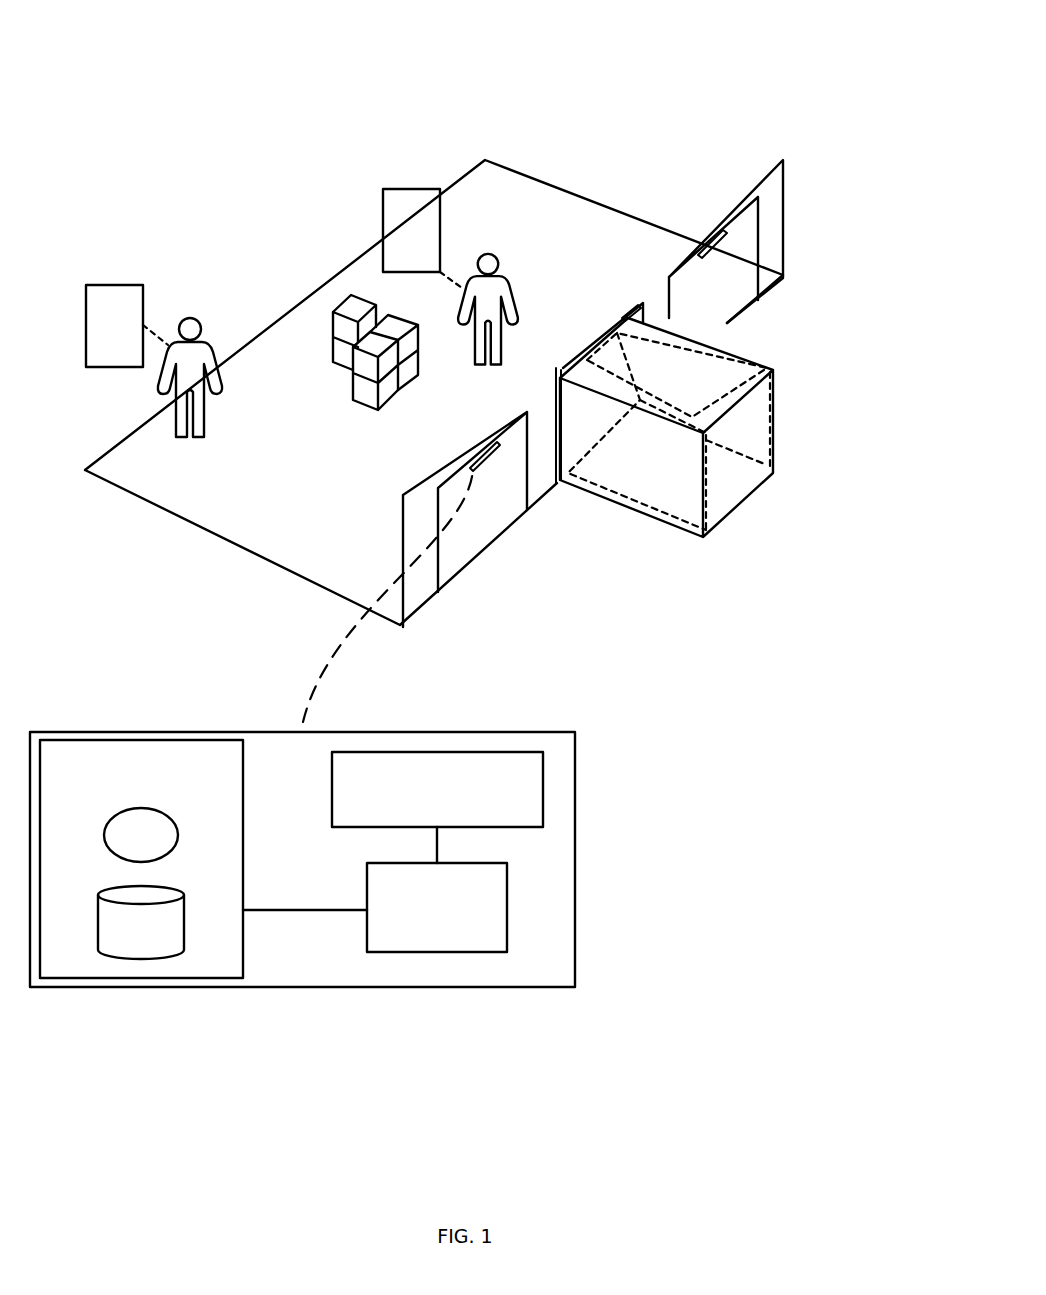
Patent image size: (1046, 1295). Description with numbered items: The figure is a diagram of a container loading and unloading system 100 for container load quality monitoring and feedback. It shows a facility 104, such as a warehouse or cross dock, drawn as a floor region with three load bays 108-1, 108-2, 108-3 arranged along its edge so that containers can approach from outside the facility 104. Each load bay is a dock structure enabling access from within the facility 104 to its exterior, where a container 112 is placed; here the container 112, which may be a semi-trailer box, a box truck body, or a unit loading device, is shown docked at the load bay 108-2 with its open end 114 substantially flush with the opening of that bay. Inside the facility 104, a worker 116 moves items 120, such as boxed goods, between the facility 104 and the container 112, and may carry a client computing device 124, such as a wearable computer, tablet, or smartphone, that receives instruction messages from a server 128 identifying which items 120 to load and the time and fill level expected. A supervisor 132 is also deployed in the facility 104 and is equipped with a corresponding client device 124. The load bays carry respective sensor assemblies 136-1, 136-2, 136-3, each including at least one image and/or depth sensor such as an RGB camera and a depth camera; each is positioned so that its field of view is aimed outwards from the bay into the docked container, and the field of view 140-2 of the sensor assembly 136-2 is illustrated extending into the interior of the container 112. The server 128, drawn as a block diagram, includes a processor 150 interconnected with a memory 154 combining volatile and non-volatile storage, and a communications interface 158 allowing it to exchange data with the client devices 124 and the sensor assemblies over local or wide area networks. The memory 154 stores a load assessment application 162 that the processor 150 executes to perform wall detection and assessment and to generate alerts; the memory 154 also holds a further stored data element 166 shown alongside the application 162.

The container loading and unloading system 100 is at (699, 96).
The facility 104 is at (470, 140).
The load bay 108-1 is at (760, 240).
The load bay 108-2 is at (628, 318).
The load bay 108-3 is at (460, 578).
The container 112 is at (798, 408).
The open end 114 is at (554, 410).
The worker 116 is at (489, 252).
The items 120 is at (332, 310).
The client computing device 124 is at (274, 278).
The server 128 is at (295, 1002).
The supervisor 132 is at (189, 316).
The sensor assembly 136-1 is at (720, 238).
The sensor assembly 136-2 is at (597, 346).
The sensor assembly 136-3 is at (470, 463).
The field of view 140-2 is at (593, 457).
The processor 150 is at (437, 907).
The memory 154 is at (141, 859).
The communications interface 158 is at (437, 789).
The load assessment application 162 is at (141, 835).
The repository 166 is at (141, 922).